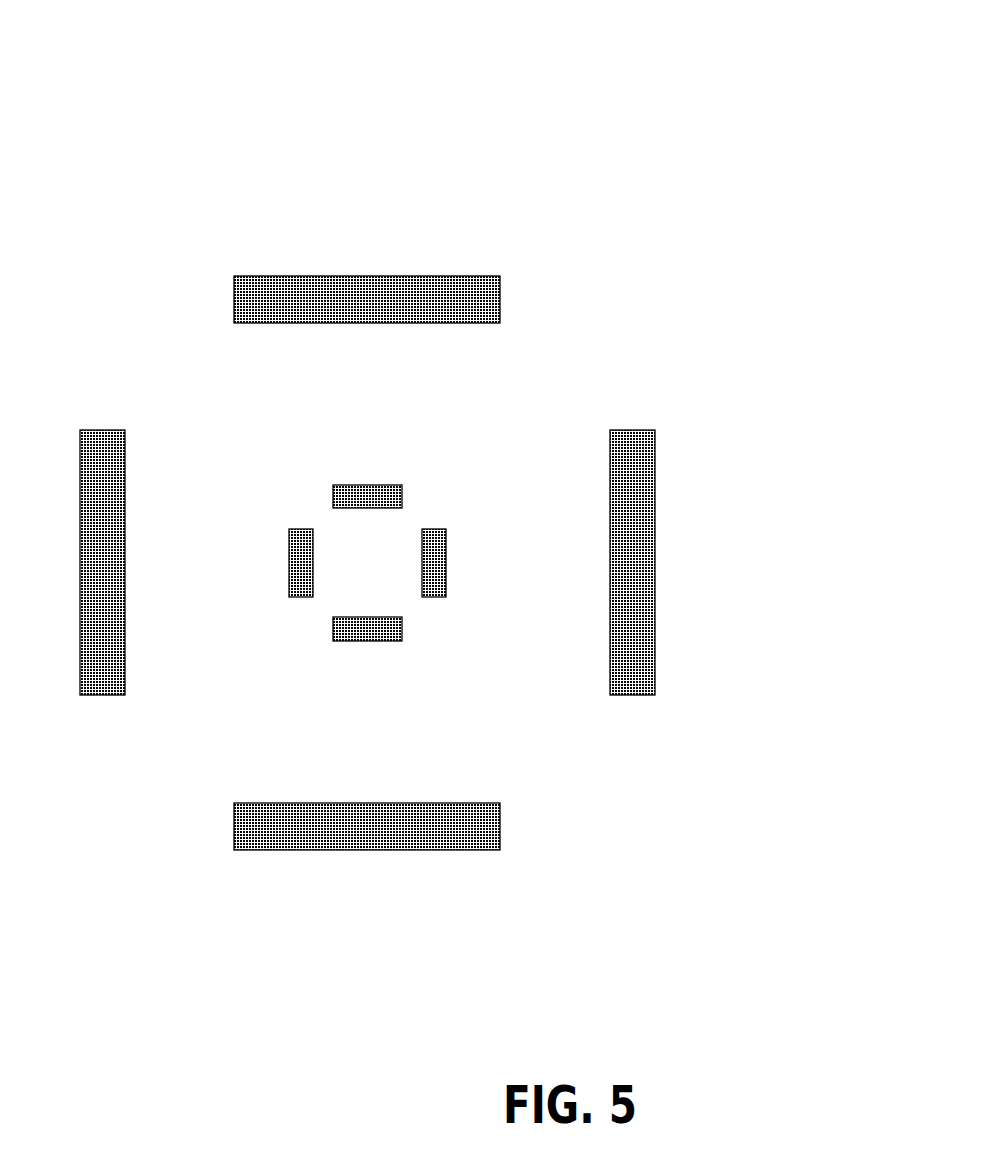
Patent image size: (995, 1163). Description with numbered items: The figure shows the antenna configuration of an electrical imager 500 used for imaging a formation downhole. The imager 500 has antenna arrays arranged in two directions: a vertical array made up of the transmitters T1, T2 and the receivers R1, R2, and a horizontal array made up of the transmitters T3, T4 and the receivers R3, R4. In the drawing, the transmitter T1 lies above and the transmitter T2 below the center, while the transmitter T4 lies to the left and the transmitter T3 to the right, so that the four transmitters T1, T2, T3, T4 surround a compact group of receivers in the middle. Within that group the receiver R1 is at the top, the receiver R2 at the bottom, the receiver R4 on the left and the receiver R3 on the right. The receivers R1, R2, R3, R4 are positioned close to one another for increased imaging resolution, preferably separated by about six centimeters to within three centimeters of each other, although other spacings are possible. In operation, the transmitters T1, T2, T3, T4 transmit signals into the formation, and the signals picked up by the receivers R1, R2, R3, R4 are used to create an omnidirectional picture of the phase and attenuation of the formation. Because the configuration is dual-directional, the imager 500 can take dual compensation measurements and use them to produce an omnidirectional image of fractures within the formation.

The electrical imager 500 is at (666, 62).
The transmitter T1 is at (367, 264).
The transmitter T2 is at (367, 862).
The transmitter T3 is at (660, 562).
The transmitter T4 is at (72, 562).
The receiver R1 is at (367, 467).
The receiver R2 is at (367, 657).
The receiver R3 is at (463, 563).
The receiver R4 is at (272, 563).